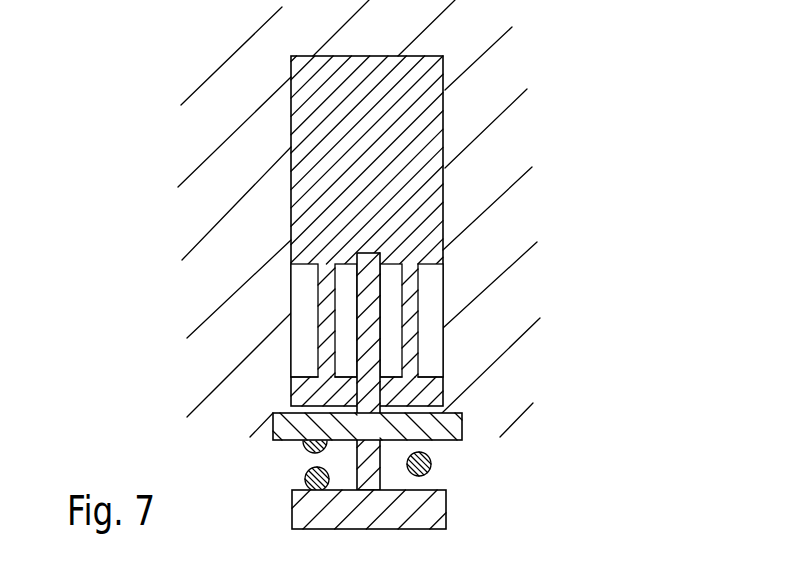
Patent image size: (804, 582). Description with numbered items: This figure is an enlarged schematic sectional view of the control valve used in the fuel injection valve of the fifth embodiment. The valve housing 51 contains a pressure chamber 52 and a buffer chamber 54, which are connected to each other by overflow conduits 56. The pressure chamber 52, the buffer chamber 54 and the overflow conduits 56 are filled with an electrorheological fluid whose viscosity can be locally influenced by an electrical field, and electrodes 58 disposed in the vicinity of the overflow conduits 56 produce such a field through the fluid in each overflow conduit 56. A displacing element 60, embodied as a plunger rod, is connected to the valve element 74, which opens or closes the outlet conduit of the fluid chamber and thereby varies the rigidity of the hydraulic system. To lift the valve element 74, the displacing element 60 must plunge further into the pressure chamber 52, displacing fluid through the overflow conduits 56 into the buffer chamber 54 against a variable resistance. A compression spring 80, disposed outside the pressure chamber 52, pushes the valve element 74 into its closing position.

The valve housing 51 is at (483, 163).
The pressure chamber 52 is at (318, 170).
The buffer chamber 54 is at (430, 390).
The overflow conduits 56 is at (325, 347).
The electrodes 58 is at (303, 310).
The displacing element 60 is at (363, 272).
The valve element 74 is at (430, 505).
The compression spring 80 is at (432, 465).